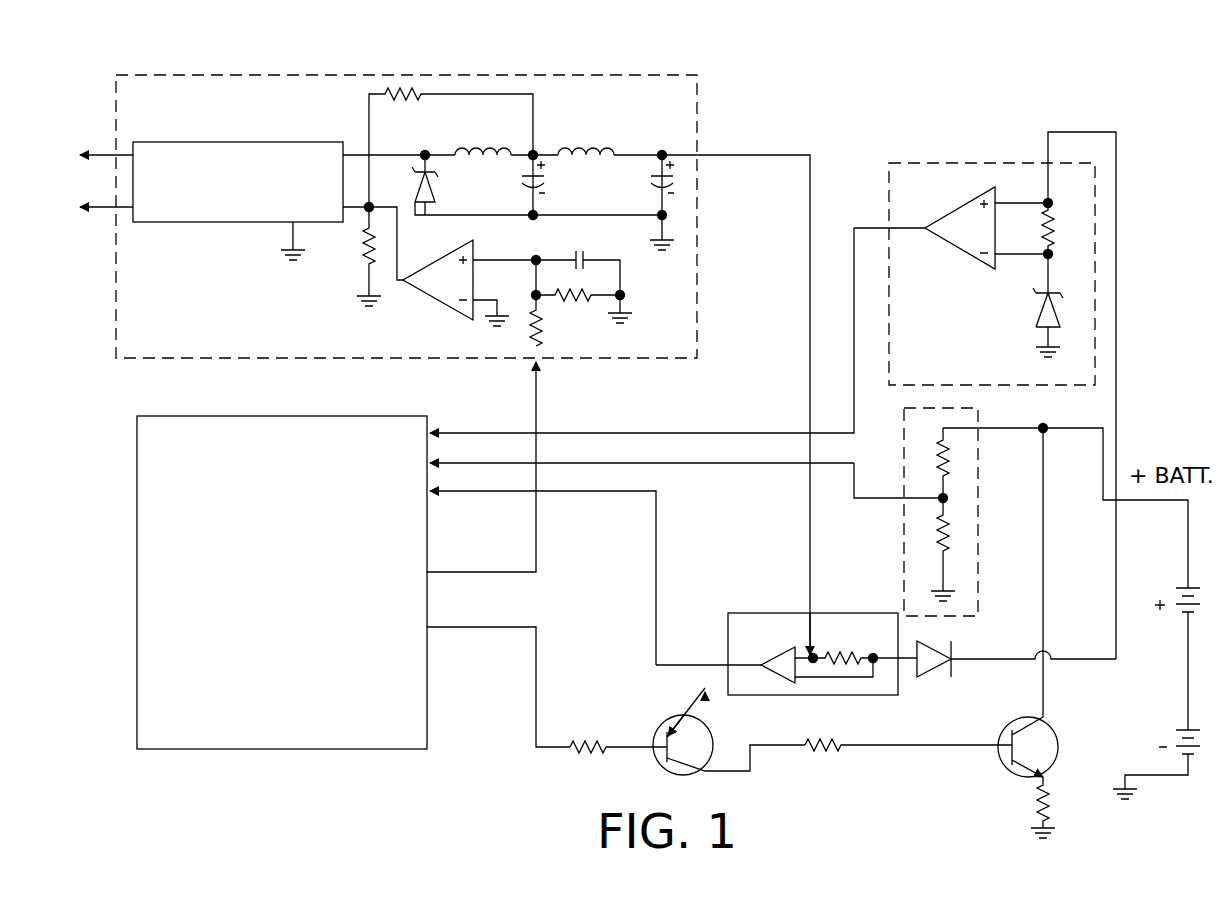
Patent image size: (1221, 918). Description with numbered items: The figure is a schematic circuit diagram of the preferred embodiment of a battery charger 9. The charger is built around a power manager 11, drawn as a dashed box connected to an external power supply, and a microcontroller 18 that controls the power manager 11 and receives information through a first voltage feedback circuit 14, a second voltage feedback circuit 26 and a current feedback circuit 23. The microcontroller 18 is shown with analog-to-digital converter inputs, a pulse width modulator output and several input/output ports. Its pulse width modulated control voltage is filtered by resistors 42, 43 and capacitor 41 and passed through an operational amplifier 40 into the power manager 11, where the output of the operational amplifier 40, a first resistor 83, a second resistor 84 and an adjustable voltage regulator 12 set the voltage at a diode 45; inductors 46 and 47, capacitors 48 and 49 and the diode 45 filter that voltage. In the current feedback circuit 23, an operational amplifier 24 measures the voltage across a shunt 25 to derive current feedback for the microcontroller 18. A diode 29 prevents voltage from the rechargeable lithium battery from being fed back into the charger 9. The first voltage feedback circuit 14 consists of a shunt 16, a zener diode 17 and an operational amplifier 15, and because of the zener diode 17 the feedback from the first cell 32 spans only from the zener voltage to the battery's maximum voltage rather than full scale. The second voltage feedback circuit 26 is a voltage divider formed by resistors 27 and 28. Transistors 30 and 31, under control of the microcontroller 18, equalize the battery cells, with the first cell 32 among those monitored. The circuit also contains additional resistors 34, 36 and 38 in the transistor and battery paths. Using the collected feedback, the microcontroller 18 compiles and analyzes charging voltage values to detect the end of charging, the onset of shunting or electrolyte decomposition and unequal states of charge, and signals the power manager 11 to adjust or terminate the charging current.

The battery charger 9 is at (738, 122).
The power manager 11 is at (308, 73).
The adjustable voltage regulator 12 is at (262, 228).
The first voltage feedback circuit 14 is at (948, 160).
The operational amplifier 15 is at (960, 205).
The shunt 16 is at (1054, 225).
The zener diode 17 is at (1034, 306).
The microcontroller 18 is at (342, 413).
The current feedback circuit 23 is at (872, 610).
The operational amplifier 24 is at (782, 648).
The shunt 25 is at (833, 652).
The second voltage feedback circuit 26 is at (982, 512).
The resistor 27 is at (940, 450).
The resistor 28 is at (940, 540).
The diode 29 is at (935, 676).
The transistor 30 is at (1178, 587).
The transistor 31 is at (1000, 760).
The first cell 32 is at (668, 733).
The resistor 34 is at (590, 745).
The resistor 36 is at (818, 745).
The resistor 38 is at (1050, 790).
The operational amplifier 40 is at (442, 302).
The capacitor 41 is at (582, 256).
The resistor 42 is at (576, 302).
The resistor 43 is at (538, 328).
The diode 45 is at (438, 186).
The inductor 46 is at (480, 150).
The inductor 47 is at (588, 146).
The capacitor 48 is at (548, 186).
The capacitor 49 is at (651, 184).
The first resistor 83 is at (406, 102).
The second resistor 84 is at (366, 246).